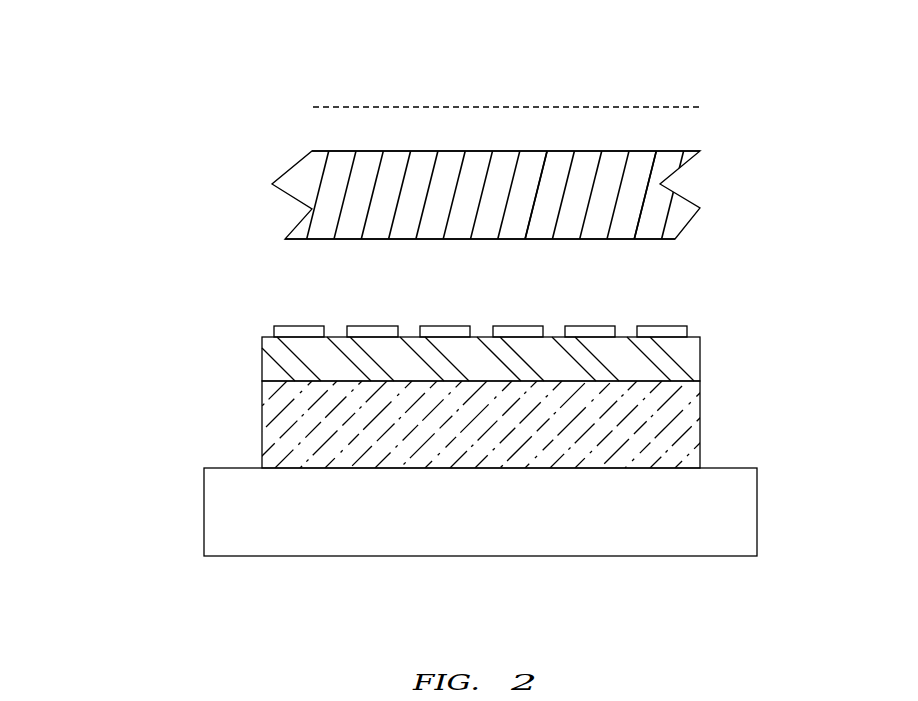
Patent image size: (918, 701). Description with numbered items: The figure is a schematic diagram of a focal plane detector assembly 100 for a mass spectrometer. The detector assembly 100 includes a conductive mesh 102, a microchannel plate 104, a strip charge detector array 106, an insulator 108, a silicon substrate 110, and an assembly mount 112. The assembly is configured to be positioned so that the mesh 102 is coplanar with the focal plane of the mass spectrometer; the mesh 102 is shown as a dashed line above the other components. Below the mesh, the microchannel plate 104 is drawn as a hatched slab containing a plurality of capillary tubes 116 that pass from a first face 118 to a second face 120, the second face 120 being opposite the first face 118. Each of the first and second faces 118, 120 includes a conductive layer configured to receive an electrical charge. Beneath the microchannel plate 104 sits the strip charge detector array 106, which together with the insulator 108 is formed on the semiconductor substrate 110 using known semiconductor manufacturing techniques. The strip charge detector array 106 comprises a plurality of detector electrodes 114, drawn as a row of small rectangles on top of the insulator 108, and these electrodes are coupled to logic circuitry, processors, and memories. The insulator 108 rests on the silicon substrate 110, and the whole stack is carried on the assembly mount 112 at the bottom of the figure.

The focal plane detector assembly 100 is at (155, 63).
The conductive mesh 102 is at (330, 100).
The microchannel plate 104 is at (332, 196).
The strip charge detector array 106 is at (277, 277).
The insulator 108 is at (282, 364).
The silicon substrate 110 is at (287, 432).
The assembly mount 112 is at (223, 503).
The detector electrodes 114 is at (295, 330).
The capillary tubes 116 is at (641, 165).
The first face 118 is at (400, 150).
The second face 120 is at (403, 241).